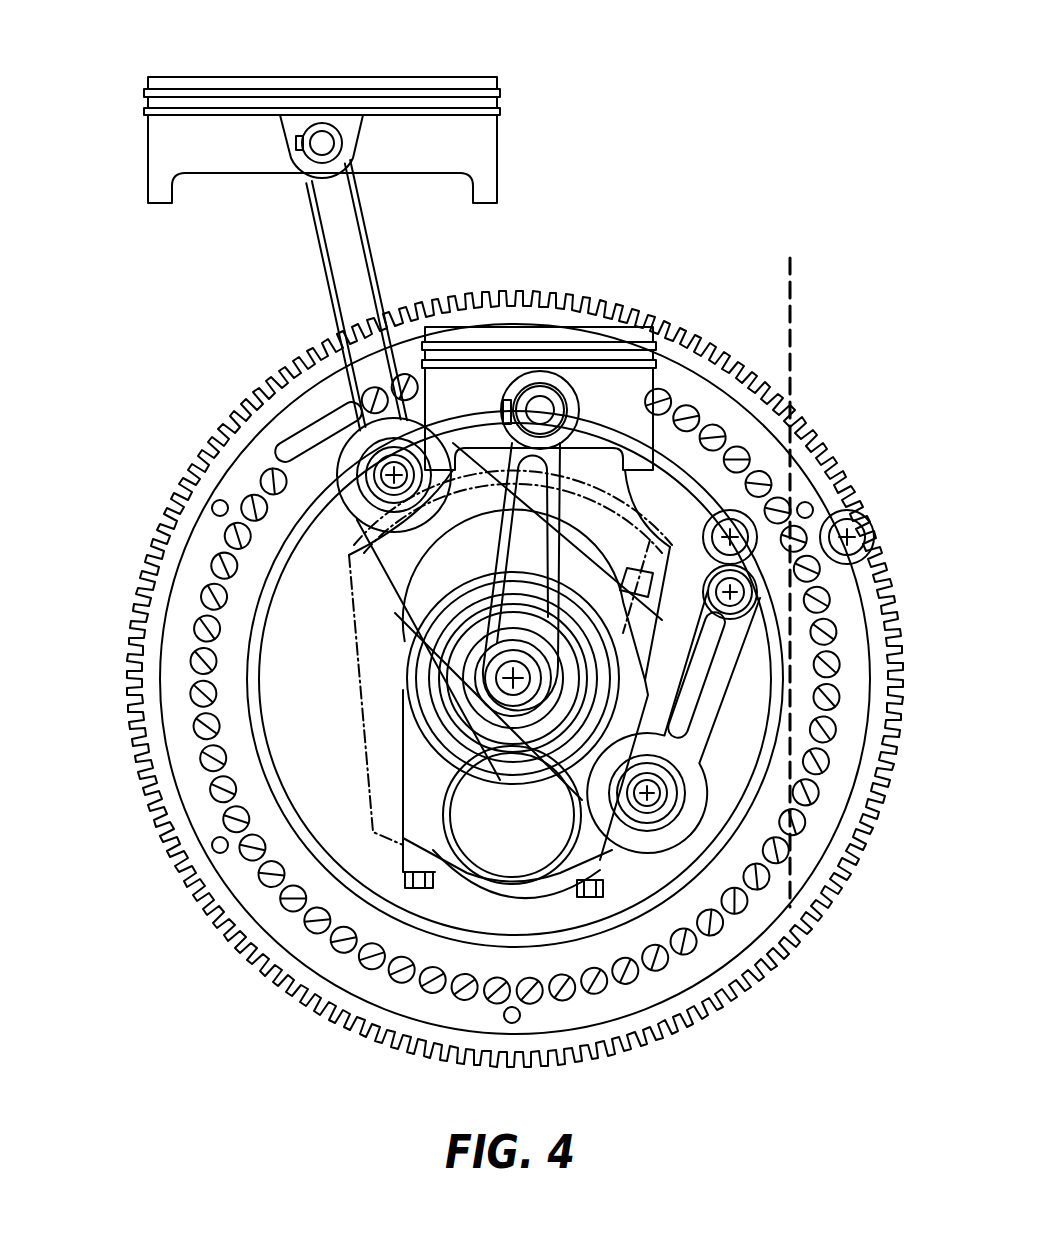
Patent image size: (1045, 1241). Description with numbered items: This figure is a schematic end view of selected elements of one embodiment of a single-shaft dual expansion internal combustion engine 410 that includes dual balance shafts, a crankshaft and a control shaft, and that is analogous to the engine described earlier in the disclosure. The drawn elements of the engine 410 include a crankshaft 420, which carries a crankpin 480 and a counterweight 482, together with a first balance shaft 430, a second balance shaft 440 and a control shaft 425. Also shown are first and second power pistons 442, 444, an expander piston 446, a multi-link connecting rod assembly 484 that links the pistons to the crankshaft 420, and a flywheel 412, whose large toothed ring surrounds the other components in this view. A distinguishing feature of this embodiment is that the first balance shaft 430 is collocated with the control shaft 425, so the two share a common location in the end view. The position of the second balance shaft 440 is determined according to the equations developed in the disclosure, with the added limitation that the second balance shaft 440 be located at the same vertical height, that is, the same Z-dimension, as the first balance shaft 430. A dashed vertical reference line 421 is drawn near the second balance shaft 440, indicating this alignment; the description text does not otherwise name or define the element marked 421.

The single-shaft dual expansion internal combustion engine 410 is at (262, 269).
The flywheel 412 is at (210, 546).
The crankshaft 420 is at (423, 837).
The reference plane 421 is at (796, 318).
The control shaft 425 is at (753, 590).
The first balance shaft 430 is at (760, 523).
The second balance shaft 440 is at (863, 523).
The first power piston 442 is at (407, 499).
The second power piston 444 is at (531, 540).
The expander piston 446 is at (190, 140).
The crankpin 480 is at (543, 878).
The counterweight 482 is at (613, 542).
The multi-link connecting rod assembly 484 is at (690, 825).